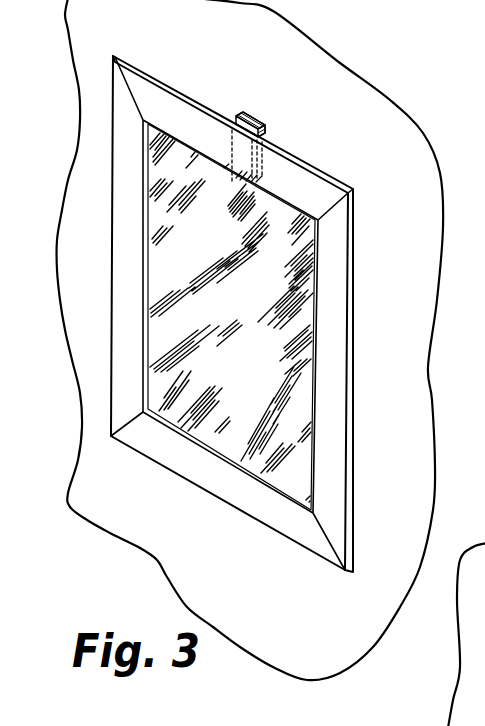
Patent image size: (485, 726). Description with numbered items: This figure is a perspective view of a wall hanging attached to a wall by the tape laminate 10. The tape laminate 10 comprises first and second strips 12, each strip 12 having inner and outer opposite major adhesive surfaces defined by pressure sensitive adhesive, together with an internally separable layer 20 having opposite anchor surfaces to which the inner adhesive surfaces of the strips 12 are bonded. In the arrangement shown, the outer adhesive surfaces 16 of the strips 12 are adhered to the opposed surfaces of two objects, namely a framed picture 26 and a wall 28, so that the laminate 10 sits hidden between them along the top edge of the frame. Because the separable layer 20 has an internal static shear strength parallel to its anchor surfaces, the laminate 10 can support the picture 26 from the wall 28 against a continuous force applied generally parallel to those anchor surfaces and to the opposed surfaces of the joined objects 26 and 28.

The tape laminate 10 is at (252, 112).
The strip 12 is at (250, 113).
The outer adhesive surface 16 is at (266, 131).
The separable layer 20 is at (260, 122).
The framed picture 26 is at (330, 178).
The wall 28 is at (203, 46).